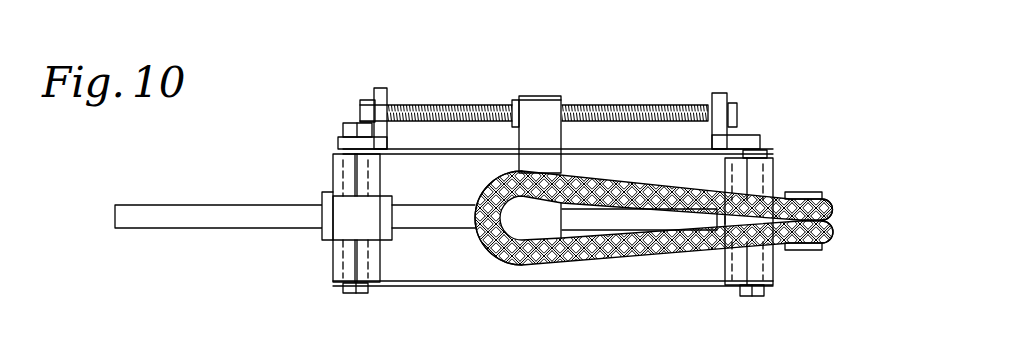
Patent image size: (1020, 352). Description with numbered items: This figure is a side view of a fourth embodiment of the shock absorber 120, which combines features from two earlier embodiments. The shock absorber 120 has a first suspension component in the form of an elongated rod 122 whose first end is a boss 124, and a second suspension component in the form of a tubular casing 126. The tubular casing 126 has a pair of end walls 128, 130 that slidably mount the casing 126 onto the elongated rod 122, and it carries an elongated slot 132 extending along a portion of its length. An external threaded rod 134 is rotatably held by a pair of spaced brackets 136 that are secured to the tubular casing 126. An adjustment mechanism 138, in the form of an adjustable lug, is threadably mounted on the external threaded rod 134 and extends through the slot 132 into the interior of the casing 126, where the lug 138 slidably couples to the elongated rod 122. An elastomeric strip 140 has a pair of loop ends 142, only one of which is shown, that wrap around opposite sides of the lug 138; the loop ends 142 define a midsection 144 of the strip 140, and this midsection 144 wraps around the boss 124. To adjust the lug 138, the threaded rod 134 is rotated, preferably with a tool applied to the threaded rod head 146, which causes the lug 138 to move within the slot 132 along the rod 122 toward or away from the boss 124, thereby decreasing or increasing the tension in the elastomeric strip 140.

The shock absorber 120 is at (334, 99).
The elongated rod 122 is at (192, 205).
The boss 124 is at (803, 192).
The tubular casing 126 is at (685, 288).
The end wall 128 is at (340, 268).
The end wall 130 is at (773, 275).
The elongated slot 132 is at (698, 108).
The external threaded rod 134 is at (617, 110).
The brackets 136 is at (387, 88).
The adjustment mechanism 138 is at (570, 108).
The elastomeric strip 140 is at (630, 258).
The loop ends 142 is at (477, 260).
The midsection 144 is at (832, 208).
The threaded rod head 146 is at (737, 108).